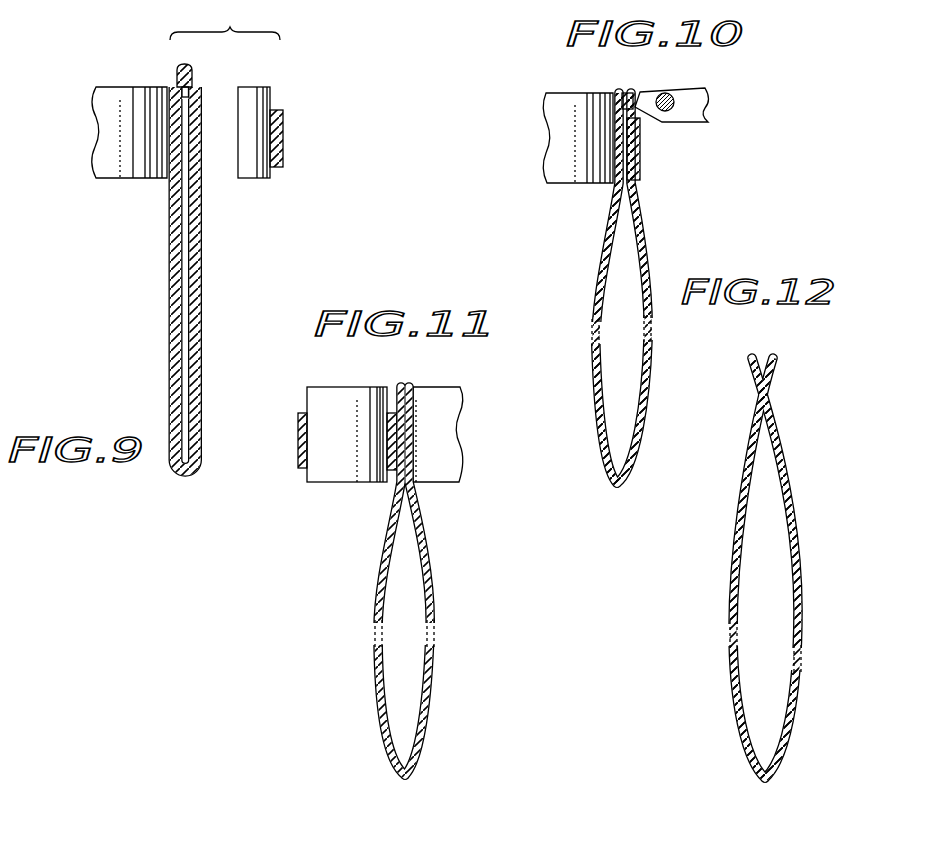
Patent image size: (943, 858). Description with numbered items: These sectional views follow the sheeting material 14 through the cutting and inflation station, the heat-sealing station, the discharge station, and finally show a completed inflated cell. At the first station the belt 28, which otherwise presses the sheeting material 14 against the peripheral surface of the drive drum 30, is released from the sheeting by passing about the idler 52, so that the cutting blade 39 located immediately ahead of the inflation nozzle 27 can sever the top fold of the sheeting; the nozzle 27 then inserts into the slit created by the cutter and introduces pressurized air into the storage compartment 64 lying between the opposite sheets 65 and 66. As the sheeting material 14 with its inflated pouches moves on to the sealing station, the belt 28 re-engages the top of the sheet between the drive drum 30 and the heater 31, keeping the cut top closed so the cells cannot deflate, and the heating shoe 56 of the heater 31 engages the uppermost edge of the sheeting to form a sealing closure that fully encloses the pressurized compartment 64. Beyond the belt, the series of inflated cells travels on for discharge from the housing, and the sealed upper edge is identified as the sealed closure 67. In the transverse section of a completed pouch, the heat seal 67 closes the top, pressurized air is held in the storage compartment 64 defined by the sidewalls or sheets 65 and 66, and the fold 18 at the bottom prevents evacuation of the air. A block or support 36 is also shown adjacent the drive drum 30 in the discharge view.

In FIG. 9, the sheeting material 14 is at (166, 277).
In FIG. 10, the sheeting material 14 is at (594, 265).
In FIG. 11, the sheeting material 14 is at (438, 616).
In FIG. 12, the sheeting material 14 is at (726, 601).
In FIG. 10, the fold 18 is at (617, 488).
In FIG. 12, the fold 18 is at (731, 776).
In FIG. 9, the inflation nozzle 27 is at (186, 99).
In FIG. 9, the belt 28 is at (284, 141).
In FIG. 10, the belt 28 is at (640, 160).
In FIG. 11, the belt 28 is at (298, 467).
In FIG. 9, the drive drum 30 is at (100, 143).
In FIG. 10, the drive drum 30 is at (545, 158).
In FIG. 11, the drive drum 30 is at (440, 472).
In FIG. 10, the heater 31 is at (700, 123).
In FIG. 11, the block 36 is at (347, 468).
In FIG. 9, the cutting blade 39 is at (178, 72).
In FIG. 9, the idler 52 is at (270, 95).
In FIG. 10, the heating shoe 56 is at (632, 92).
In FIG. 9, the storage compartment 64 is at (182, 373).
In FIG. 10, the storage compartment 64 is at (620, 418).
In FIG. 12, the storage compartment 64 is at (757, 673).
In FIG. 10, the sheet 65 is at (600, 440).
In FIG. 12, the sheet 65 is at (741, 720).
In FIG. 10, the sheet 66 is at (647, 380).
In FIG. 12, the sheet 66 is at (787, 473).
In FIG. 11, the sealed closure 67 is at (408, 413).
In FIG. 12, the sealed closure 67 is at (775, 398).